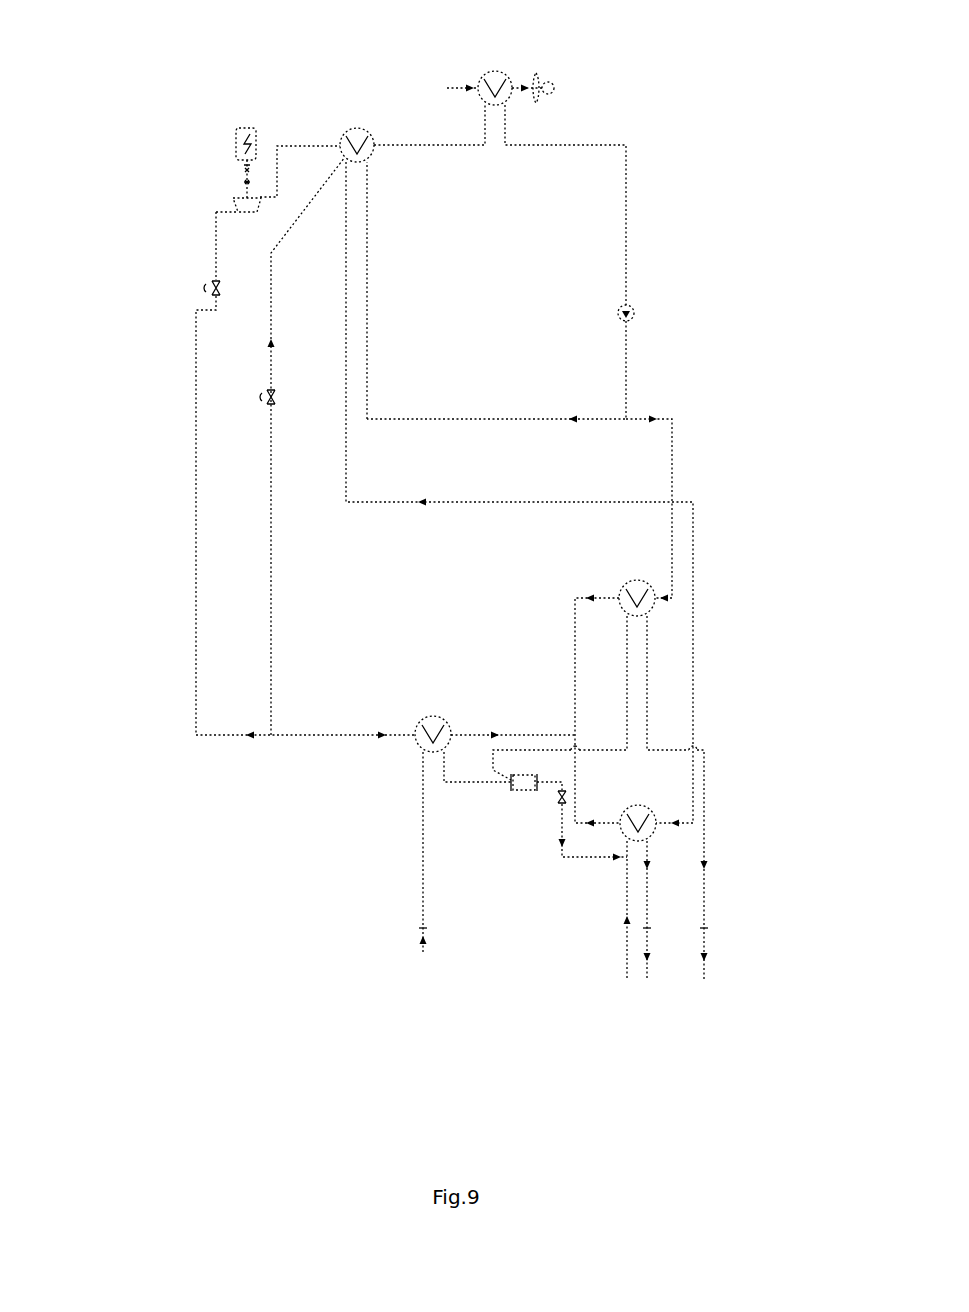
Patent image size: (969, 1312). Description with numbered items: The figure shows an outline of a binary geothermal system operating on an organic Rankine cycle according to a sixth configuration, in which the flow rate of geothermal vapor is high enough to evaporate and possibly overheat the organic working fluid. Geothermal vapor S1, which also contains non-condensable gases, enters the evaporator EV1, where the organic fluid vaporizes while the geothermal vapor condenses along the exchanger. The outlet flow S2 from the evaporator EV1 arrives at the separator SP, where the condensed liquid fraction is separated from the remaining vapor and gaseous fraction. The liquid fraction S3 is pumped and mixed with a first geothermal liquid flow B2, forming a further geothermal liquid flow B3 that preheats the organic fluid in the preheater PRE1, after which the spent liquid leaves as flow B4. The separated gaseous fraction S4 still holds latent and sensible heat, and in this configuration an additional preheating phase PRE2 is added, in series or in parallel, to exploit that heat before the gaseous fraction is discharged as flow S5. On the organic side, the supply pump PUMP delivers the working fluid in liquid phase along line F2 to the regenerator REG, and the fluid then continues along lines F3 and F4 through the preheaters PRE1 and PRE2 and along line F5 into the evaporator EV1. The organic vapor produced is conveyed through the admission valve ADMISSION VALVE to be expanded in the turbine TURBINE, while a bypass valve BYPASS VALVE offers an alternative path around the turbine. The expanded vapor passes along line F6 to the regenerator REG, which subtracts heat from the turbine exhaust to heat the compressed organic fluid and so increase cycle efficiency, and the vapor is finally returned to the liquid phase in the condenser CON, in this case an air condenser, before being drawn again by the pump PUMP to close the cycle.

The expansion turbine TURBINE is at (233, 198).
The admission valve ADMISSION VALVE is at (207, 285).
The bypass valve BYPASS VALVE is at (265, 393).
The working fluid line F6 is at (298, 146).
The regenerator REG is at (352, 128).
The condenser CON is at (496, 72).
The supply pump PUMP is at (635, 308).
The working fluid line F2 is at (482, 419).
The working fluid line F3 is at (488, 502).
The preheating phase PRE2 is at (651, 583).
The evaporator EV1 is at (431, 715).
The working fluid line F5 is at (338, 735).
The working fluid line F4 is at (527, 735).
The separated gaseous fraction S4 is at (597, 745).
The preheater PRE1 is at (650, 810).
The outlet flow S2 is at (470, 783).
The separator SP is at (508, 788).
The liquid fraction S3 is at (558, 822).
The further geothermal liquid flow B3 is at (630, 846).
The geothermal vapor S1 is at (423, 902).
The heat source stream S5 is at (704, 911).
The first geothermal liquid flow B2 is at (625, 942).
The brine stream B4 is at (647, 978).